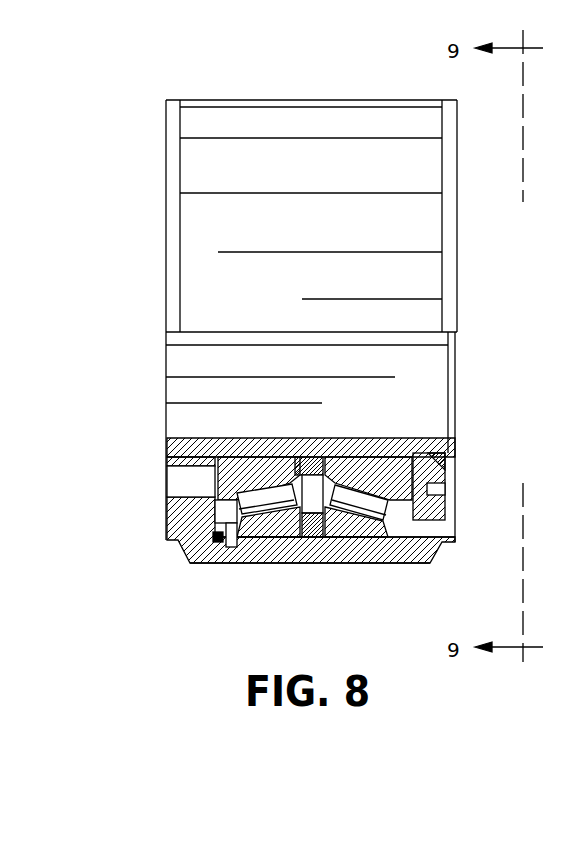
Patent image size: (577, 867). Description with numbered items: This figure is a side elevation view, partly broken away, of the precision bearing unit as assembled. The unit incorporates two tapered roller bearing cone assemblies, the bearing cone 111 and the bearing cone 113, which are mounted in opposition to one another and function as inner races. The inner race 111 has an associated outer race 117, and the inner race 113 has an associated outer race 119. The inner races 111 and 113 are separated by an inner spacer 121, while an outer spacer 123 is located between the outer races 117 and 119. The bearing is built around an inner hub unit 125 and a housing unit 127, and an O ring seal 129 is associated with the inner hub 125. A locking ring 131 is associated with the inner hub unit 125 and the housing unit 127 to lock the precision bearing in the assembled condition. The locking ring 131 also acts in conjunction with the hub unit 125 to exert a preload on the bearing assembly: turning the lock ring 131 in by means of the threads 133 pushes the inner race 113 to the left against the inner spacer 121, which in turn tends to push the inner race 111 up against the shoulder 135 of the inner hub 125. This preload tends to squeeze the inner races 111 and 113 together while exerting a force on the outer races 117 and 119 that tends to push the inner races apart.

The bearing cone 111 is at (250, 466).
The bearing cone 113 is at (382, 460).
The outer race 117 is at (270, 527).
The outer race 119 is at (377, 535).
The inner spacer 121 is at (330, 458).
The outer spacer 123 is at (312, 520).
The inner hub unit 125 is at (166, 145).
The housing unit 127 is at (390, 118).
The O ring seal 129 is at (215, 545).
The locking ring 131 is at (455, 472).
The threads 133 is at (455, 447).
The shoulder 135 is at (215, 478).